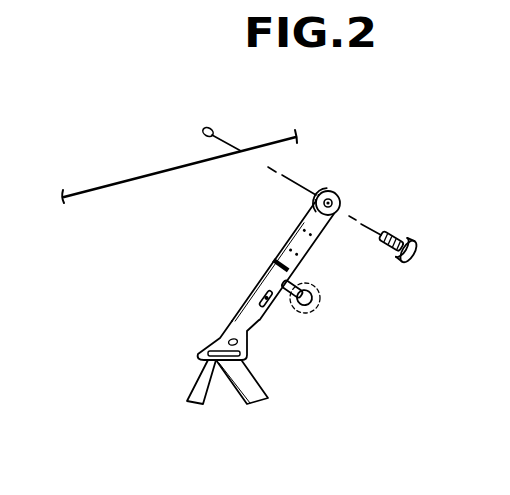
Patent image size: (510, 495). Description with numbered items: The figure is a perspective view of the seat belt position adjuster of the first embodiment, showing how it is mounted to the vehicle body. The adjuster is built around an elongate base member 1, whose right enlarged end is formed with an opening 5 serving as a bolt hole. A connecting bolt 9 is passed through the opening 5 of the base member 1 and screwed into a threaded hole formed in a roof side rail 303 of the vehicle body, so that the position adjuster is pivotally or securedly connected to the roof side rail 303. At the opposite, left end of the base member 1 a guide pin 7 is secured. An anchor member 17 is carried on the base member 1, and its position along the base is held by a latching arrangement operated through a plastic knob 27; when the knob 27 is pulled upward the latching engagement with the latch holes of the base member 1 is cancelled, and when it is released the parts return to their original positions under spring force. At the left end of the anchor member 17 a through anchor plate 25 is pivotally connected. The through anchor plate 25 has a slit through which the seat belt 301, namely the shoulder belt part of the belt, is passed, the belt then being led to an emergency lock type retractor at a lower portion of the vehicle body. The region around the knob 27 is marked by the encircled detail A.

The base member 1 is at (340, 181).
The opening 5 is at (333, 203).
The guide pin 7 is at (274, 300).
The connecting bolt 9 is at (398, 235).
The anchor member 17 is at (232, 303).
The through anchor plate 25 is at (247, 353).
The knob 27 is at (312, 291).
The seat belt 301 is at (237, 392).
The roof side rail 303 is at (150, 164).
The detail area A is at (320, 303).